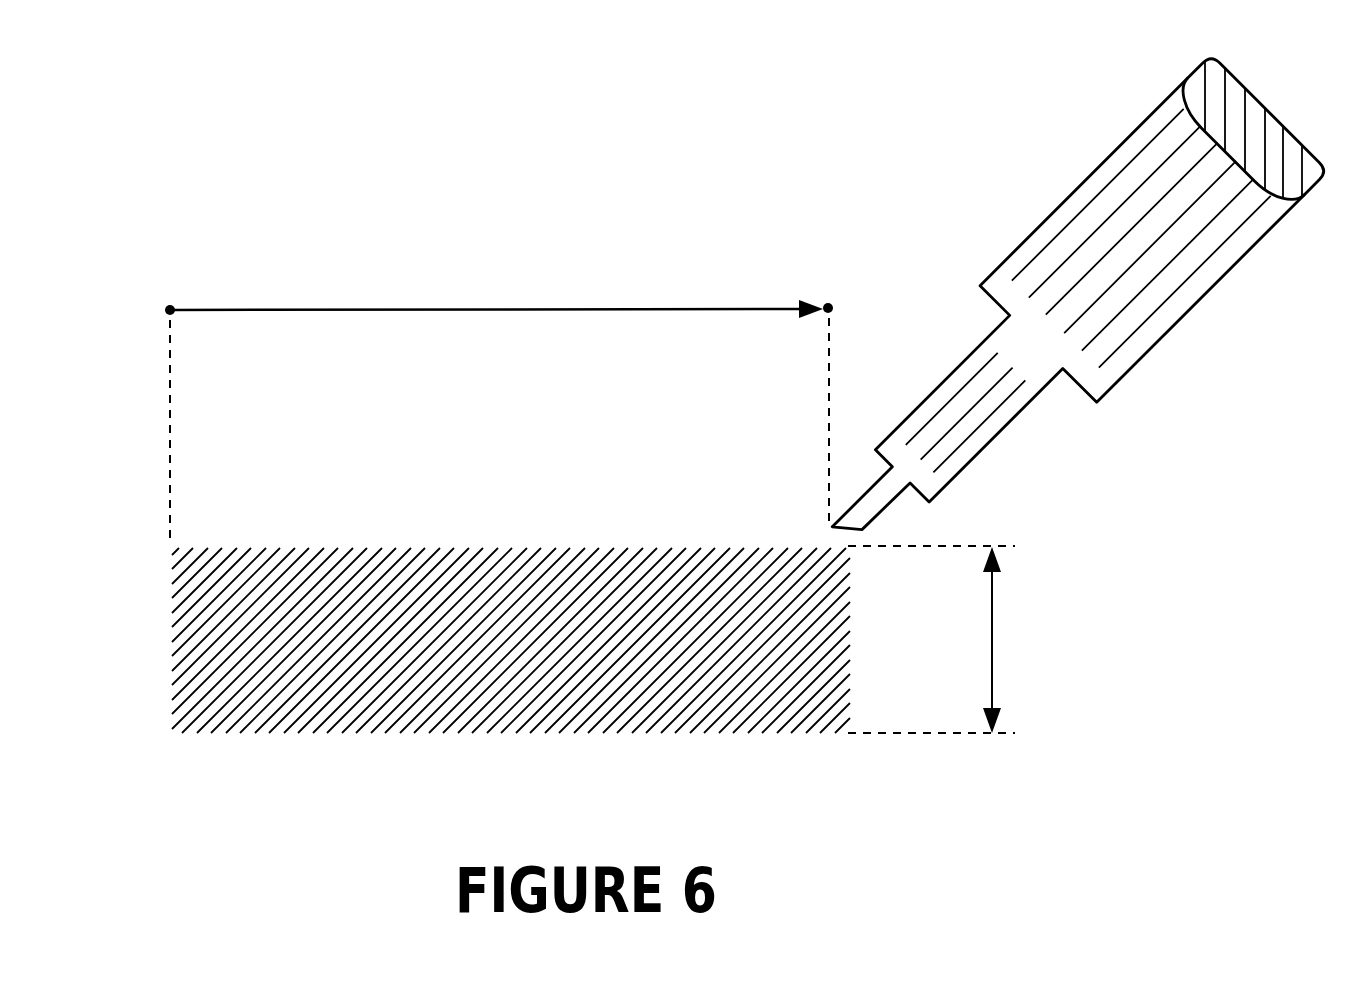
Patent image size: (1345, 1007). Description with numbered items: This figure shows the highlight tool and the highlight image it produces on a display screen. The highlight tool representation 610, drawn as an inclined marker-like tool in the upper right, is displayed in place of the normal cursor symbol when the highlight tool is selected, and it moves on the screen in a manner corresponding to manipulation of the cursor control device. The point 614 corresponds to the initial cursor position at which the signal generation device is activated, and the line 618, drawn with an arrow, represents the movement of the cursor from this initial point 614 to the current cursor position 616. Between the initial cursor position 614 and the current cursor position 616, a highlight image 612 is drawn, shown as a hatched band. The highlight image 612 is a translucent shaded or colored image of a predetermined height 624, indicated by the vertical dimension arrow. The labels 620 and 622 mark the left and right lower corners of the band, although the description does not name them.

The highlight tool representation 610 is at (1245, 255).
The highlight image 612 is at (545, 547).
The initial cursor position 614 is at (170, 285).
The current cursor position 616 is at (828, 283).
The line 618 is at (545, 308).
The substrate first edge 620 is at (173, 807).
The substrate second edge 622 is at (850, 807).
The predetermined height 624 is at (995, 637).